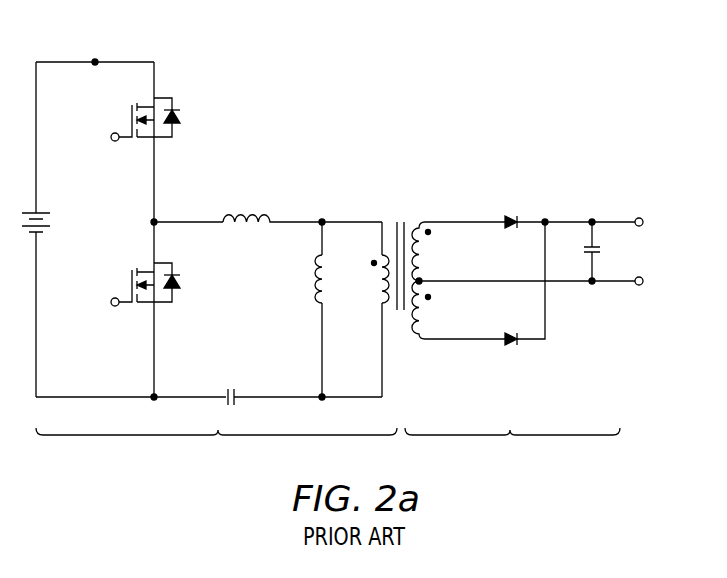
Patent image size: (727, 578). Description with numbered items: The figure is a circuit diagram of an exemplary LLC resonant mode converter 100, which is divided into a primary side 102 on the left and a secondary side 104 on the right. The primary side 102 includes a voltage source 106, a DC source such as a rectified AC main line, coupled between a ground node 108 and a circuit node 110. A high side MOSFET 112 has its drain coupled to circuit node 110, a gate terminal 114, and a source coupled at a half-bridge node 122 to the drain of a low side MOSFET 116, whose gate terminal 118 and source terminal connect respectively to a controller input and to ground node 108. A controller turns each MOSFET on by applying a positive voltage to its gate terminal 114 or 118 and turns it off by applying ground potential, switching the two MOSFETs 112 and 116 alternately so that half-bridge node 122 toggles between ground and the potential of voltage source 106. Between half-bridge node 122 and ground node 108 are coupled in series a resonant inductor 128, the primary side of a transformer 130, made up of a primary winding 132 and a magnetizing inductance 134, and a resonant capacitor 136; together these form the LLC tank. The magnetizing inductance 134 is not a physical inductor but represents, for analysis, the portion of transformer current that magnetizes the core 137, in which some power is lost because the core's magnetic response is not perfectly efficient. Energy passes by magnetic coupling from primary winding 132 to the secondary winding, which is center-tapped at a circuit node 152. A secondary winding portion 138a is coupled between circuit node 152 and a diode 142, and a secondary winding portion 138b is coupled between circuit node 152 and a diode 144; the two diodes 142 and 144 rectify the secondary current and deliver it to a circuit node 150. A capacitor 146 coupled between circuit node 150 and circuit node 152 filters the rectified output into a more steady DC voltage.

The LLC resonant mode converter 100 is at (548, 62).
The primary side 102 is at (216, 447).
The secondary side 104 is at (512, 447).
The voltage source 106 is at (46, 212).
The ground node 108 is at (153, 399).
The circuit node 110 is at (97, 60).
The high side MOSFET 112 is at (176, 106).
The gate terminal 114 is at (111, 133).
The low side MOSFET 116 is at (176, 270).
The gate terminal 118 is at (111, 298).
The half-bridge node 122 is at (156, 220).
The resonant inductor 128 is at (246, 213).
The transformer 130 is at (388, 288).
The primary winding 132 is at (380, 282).
The magnetizing inductance 134 is at (316, 278).
The resonant capacitor 136 is at (227, 393).
The core 137 is at (398, 312).
The secondary winding portion 138a is at (423, 257).
The secondary winding portion 138b is at (422, 324).
The diode 142 is at (512, 216).
The diode 144 is at (512, 345).
The capacitor 146 is at (602, 251).
The circuit node 150 is at (643, 219).
The circuit node 152 is at (643, 285).